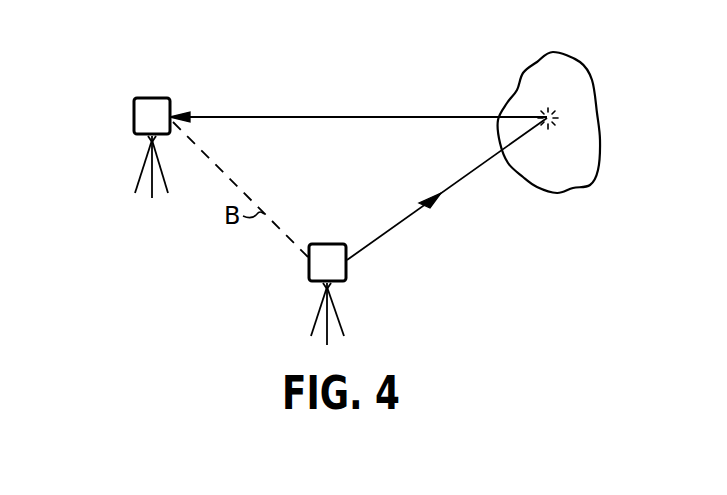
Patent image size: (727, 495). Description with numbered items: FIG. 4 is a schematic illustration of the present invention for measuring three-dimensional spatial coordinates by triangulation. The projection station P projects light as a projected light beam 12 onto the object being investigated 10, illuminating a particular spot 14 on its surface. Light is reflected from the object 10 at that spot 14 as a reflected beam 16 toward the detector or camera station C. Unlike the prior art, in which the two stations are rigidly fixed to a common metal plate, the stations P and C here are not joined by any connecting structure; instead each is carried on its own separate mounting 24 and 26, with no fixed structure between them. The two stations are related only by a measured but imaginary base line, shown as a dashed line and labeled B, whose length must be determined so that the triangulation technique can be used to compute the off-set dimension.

The object being investigated 10 is at (568, 175).
The projected light beam 12 is at (398, 232).
The illuminated spot 14 is at (553, 108).
The reflected beam 16 is at (404, 113).
The separate mounting 24 is at (316, 313).
The separate mounting 26 is at (140, 168).